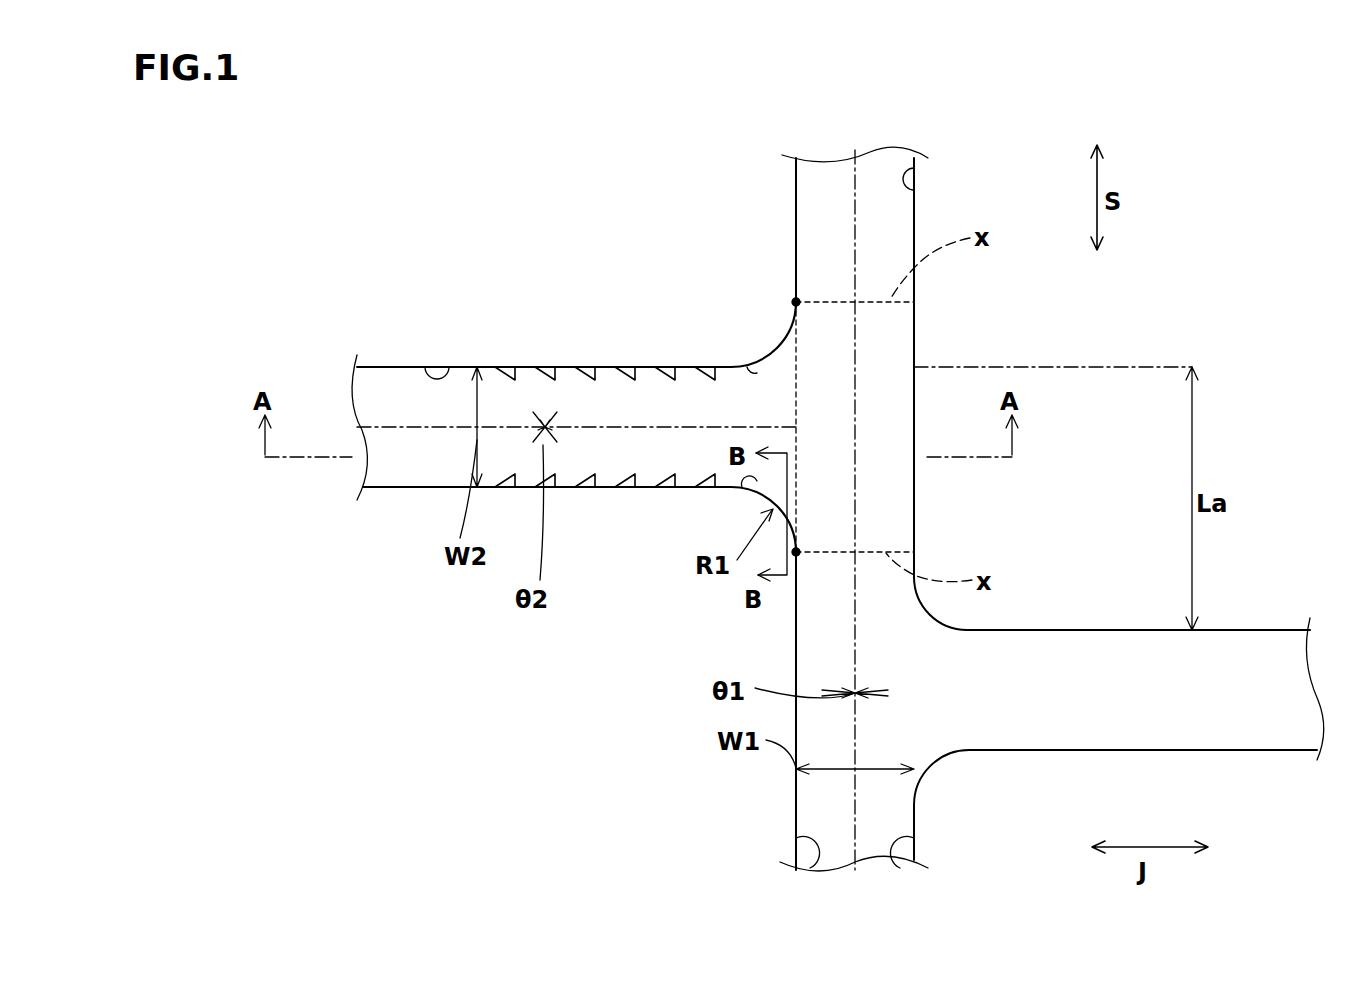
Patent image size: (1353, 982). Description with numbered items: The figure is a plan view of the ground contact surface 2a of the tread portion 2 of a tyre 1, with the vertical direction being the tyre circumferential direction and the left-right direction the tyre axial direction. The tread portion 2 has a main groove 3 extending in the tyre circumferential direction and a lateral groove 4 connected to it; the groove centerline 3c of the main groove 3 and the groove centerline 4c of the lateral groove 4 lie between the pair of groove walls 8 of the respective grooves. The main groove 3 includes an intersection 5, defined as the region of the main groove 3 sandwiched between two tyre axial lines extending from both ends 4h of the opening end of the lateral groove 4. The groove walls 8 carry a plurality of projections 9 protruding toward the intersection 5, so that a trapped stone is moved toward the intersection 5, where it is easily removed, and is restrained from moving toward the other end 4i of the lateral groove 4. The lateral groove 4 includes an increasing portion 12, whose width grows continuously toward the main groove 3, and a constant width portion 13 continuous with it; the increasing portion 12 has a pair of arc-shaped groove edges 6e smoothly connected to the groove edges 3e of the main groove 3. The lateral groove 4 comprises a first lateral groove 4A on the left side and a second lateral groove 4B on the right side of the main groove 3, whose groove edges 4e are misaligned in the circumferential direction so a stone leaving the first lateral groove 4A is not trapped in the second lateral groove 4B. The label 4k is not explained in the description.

The tyre 1 is at (647, 140).
The tread portion 2 is at (627, 190).
The ground contact surface 2a is at (598, 255).
The main groove 3 is at (876, 190).
The groove centerline 3c is at (855, 828).
The groove edges 3e is at (805, 845).
The lateral groove 4 is at (407, 392).
The first lateral groove 4A is at (418, 505).
The second lateral groove 4B is at (1223, 733).
The groove centerline 4c is at (384, 427).
The groove edges 4e is at (642, 488).
The ends of opening end 4h is at (796, 300).
The other end 4i is at (238, 470).
The opening of second flow path into first flow path 4k is at (797, 467).
The intersection 5 is at (893, 318).
The groove edges 6e is at (748, 368).
The groove walls 8 is at (450, 367).
The projections 9 is at (505, 370).
The increasing portion 12 is at (787, 413).
The constant width portion 13 is at (624, 450).